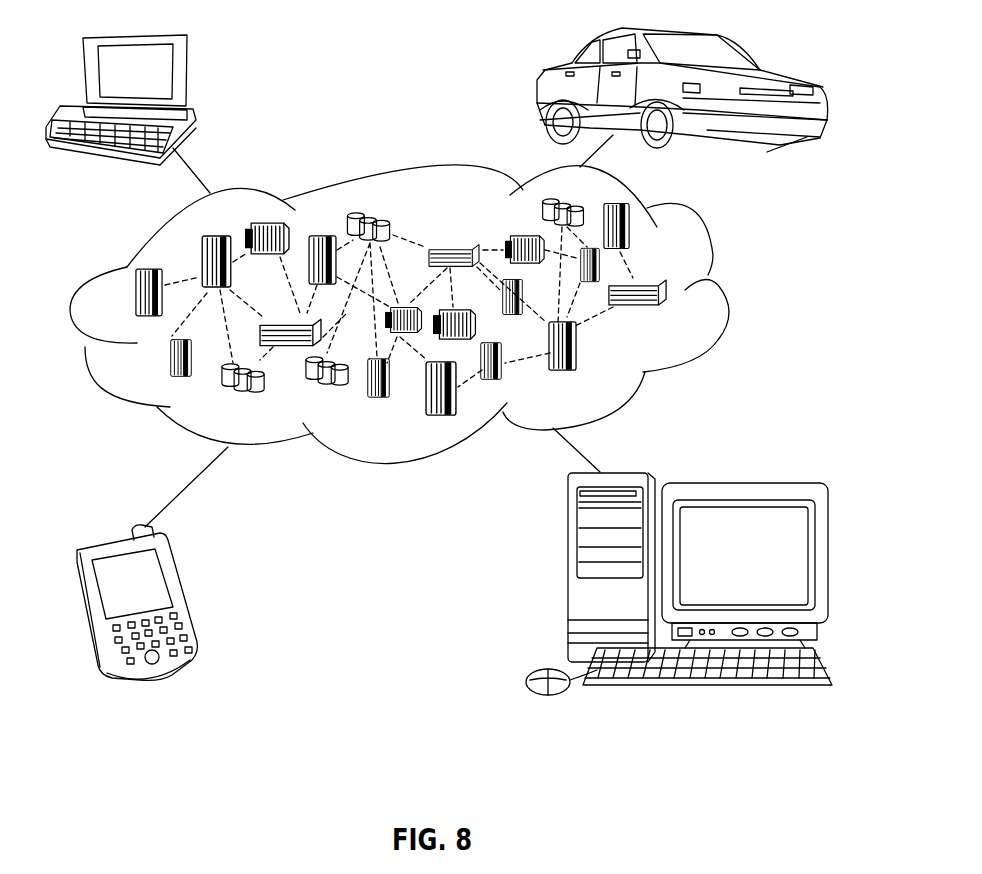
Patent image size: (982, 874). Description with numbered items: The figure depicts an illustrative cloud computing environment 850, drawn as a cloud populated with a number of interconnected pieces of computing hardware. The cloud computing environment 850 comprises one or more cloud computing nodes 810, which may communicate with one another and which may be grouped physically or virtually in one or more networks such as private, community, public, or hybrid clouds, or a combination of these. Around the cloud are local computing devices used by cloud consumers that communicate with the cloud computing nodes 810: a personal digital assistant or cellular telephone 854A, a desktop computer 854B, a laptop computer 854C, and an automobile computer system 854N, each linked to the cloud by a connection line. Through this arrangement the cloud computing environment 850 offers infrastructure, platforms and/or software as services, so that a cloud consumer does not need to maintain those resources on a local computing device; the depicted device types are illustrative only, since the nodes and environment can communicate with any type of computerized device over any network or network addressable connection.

The cloud computing nodes 810 is at (695, 315).
The cloud computing environment 850 is at (717, 258).
The personal digital assistant (PDA) or cellular telephone 854A is at (178, 595).
The desktop computer 854B is at (568, 575).
The laptop computer 854C is at (185, 78).
The automobile computer system 854N is at (540, 76).